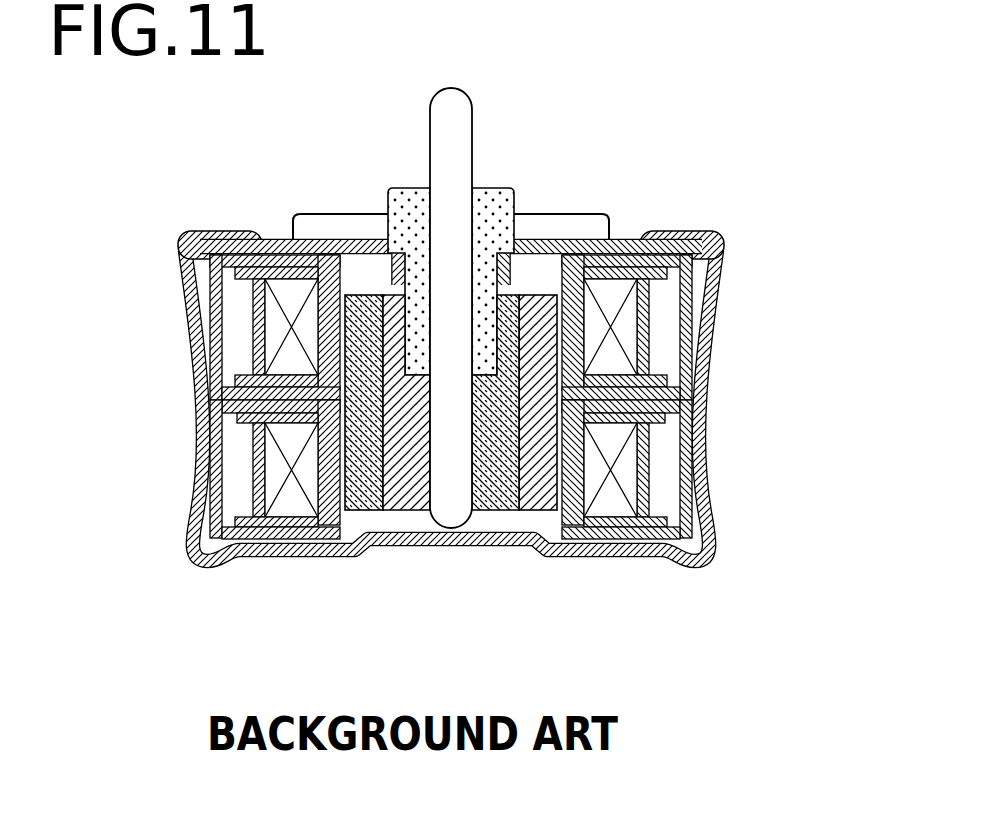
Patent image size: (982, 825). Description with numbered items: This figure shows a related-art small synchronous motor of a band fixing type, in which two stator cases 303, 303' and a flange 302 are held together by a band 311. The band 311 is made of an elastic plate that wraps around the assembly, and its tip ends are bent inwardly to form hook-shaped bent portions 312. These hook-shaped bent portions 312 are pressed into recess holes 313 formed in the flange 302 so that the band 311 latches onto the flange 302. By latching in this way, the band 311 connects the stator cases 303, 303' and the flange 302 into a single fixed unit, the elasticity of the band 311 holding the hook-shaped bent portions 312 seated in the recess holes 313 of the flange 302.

The flange 302 is at (593, 227).
The stator case 303 is at (382, 317).
The stator case 303' is at (381, 469).
The band 311 is at (233, 557).
The hook-shaped bent portion 312 is at (188, 230).
The recess hole 313 is at (267, 240).